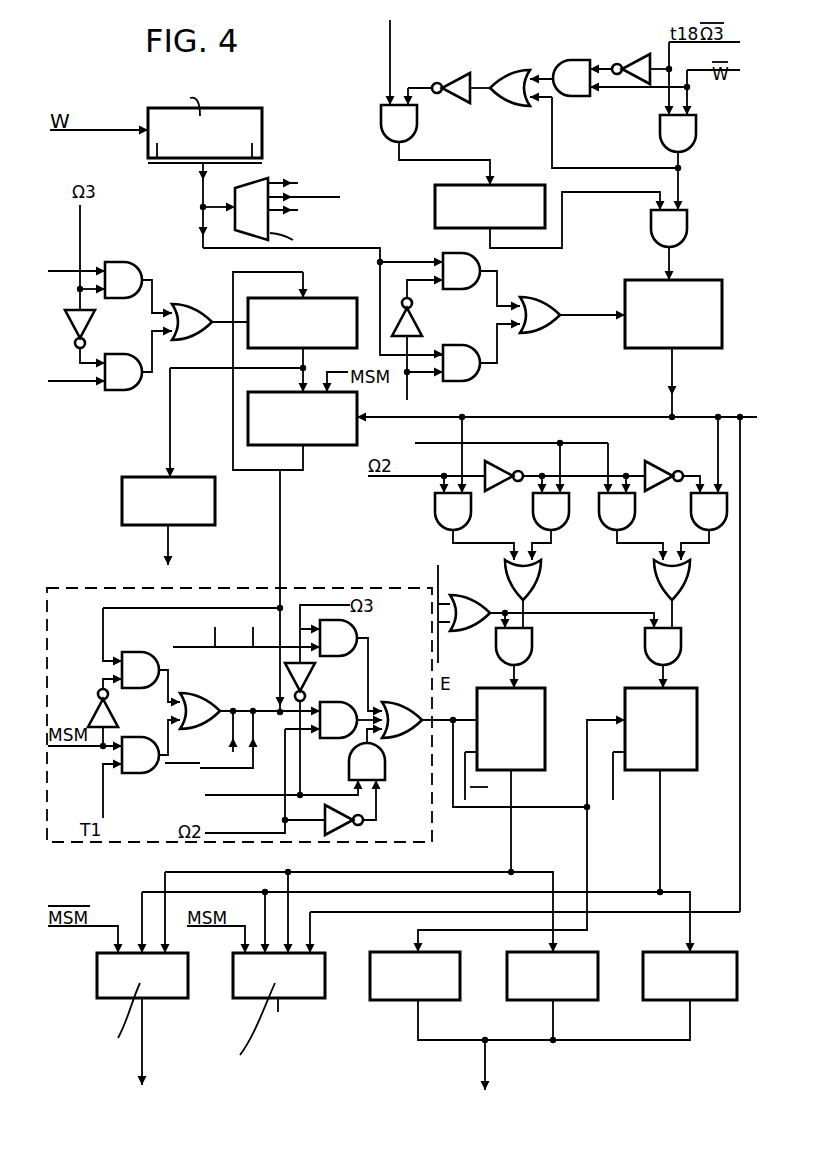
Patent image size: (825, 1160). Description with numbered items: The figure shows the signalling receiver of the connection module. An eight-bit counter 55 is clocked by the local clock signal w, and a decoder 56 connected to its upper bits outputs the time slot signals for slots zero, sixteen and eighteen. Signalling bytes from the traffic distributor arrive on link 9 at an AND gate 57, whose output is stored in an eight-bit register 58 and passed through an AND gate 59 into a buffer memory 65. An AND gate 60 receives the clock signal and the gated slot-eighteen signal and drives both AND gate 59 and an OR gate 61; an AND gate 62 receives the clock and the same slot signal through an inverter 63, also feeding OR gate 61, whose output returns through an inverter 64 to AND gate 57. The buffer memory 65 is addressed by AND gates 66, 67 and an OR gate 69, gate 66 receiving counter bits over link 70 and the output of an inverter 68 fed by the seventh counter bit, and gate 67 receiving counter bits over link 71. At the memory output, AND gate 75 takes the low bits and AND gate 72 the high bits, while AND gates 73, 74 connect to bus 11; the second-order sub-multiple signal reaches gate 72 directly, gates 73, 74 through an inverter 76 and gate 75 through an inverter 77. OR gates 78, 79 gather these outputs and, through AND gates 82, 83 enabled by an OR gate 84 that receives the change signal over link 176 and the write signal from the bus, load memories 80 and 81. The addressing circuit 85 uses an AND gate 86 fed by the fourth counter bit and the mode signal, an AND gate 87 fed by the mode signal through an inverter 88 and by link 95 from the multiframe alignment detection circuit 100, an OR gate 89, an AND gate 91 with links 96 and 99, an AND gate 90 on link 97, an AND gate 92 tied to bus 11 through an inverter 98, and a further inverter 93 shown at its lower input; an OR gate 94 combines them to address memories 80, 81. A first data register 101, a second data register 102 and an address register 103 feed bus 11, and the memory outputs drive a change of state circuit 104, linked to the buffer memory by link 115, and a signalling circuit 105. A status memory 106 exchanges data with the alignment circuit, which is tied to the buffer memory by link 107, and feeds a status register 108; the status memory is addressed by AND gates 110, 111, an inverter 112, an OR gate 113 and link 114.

The link 9 is at (390, 55).
The bus 11 is at (62, 270).
The 8-bit counter 55 is at (256, 113).
The decoder 56 is at (258, 184).
The AND gate 57 is at (390, 118).
The 8-bit register 58 is at (440, 200).
The AND gate 59 is at (680, 225).
The AND gate 60 is at (685, 132).
The OR gate 61 is at (512, 77).
The AND gate 62 is at (576, 78).
The inverter 63 is at (638, 66).
The inverter 64 is at (452, 75).
The buffer memory 65 is at (712, 348).
The AND gate 66 is at (481, 292).
The AND gate 67 is at (476, 374).
The inverter 68 is at (412, 320).
The OR gate 69 is at (553, 308).
The link 70 is at (407, 263).
The link 71 is at (398, 358).
The AND gate 72 is at (440, 524).
The AND gate 73 is at (551, 528).
The AND gate 74 is at (608, 528).
The AND gate 75 is at (722, 528).
The inverter 76 is at (494, 492).
The inverter 77 is at (652, 492).
The OR gate 78 is at (533, 580).
The OR gate 79 is at (658, 578).
The memory 80 is at (532, 718).
The memory 81 is at (680, 718).
The AND gate 82 is at (521, 650).
The AND gate 83 is at (660, 650).
The OR gate 84 is at (470, 624).
The addressing circuit 85 is at (88, 585).
The AND gate 86 is at (140, 776).
The AND gate 87 is at (137, 688).
The inverter 88 is at (92, 718).
The OR gate 89 is at (199, 693).
The AND gate 90 is at (360, 633).
The AND gate 91 is at (346, 736).
The AND gate 92 is at (382, 772).
The inverter 93 is at (366, 822).
The OR gate 94 is at (410, 738).
The link 95 is at (155, 609).
The link 96 is at (275, 704).
The link 97 is at (200, 648).
The inverter 98 is at (316, 675).
The link 99 is at (231, 740).
The multiframe alignment detection circuit 100 is at (333, 446).
The first data register 101 is at (676, 998).
The second data register 102 is at (545, 998).
The address register 103 is at (393, 993).
The change of state circuit 104 is at (262, 983).
The signalling circuit 105 is at (122, 983).
The status memory 106 is at (325, 300).
The link 107 is at (560, 416).
The status register 108 is at (128, 500).
The AND gate 110 is at (125, 272).
The AND gate 111 is at (125, 388).
The inverter 112 is at (95, 322).
The OR gate 113 is at (205, 305).
The link 114 is at (68, 382).
The link 115 is at (740, 845).
The link 176 is at (439, 578).